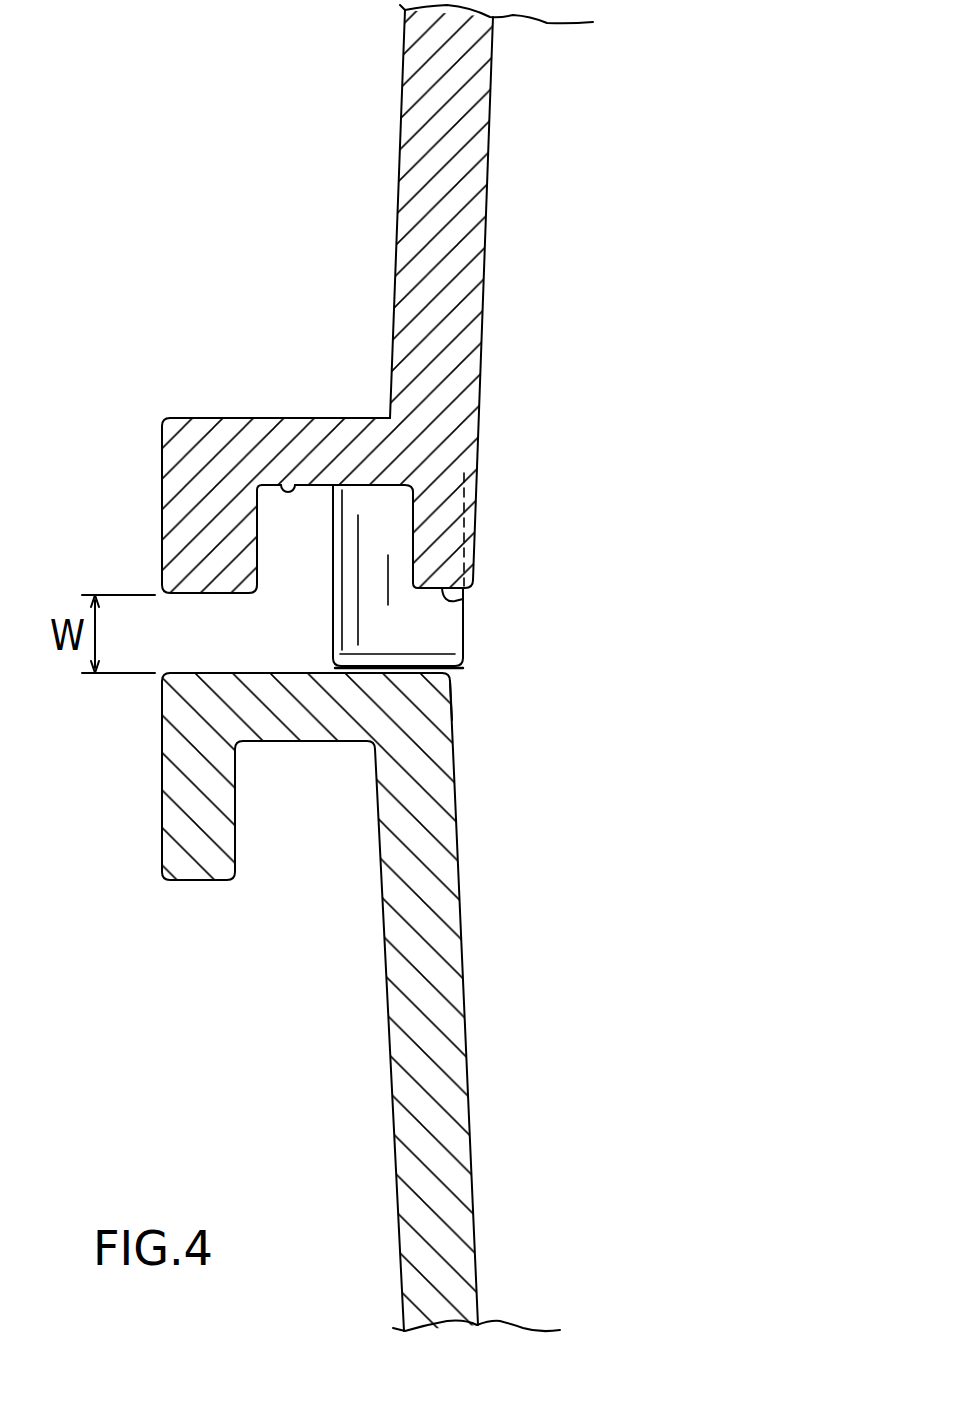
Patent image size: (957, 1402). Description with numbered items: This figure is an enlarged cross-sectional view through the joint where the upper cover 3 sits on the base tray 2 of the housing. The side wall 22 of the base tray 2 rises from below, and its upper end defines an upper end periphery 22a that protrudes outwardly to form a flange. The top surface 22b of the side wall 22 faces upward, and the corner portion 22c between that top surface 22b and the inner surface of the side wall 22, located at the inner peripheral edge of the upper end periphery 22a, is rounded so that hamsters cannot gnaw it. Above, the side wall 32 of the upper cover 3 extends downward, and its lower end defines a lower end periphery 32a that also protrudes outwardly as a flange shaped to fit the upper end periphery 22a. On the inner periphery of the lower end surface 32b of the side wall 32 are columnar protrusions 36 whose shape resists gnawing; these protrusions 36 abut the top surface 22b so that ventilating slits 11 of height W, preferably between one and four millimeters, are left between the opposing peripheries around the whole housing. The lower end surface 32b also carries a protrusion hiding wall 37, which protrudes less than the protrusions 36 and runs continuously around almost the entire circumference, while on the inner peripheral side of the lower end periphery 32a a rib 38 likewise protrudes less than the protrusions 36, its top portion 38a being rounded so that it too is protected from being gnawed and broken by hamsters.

The base tray 2 is at (488, 1205).
The upper cover 3 is at (497, 160).
The ventilating slits 11 is at (217, 635).
The side wall 22 is at (447, 1070).
The upper end periphery 22a is at (333, 718).
The top surface 22b is at (268, 670).
The corner portion 22c is at (450, 673).
The side wall 32 is at (457, 253).
The lower end periphery 32a is at (313, 440).
The lower end surface 32b is at (284, 480).
The protrusions 36 is at (412, 632).
The protrusion hiding wall 37 is at (177, 537).
The rib 38 is at (443, 527).
The top portion 38a is at (467, 602).